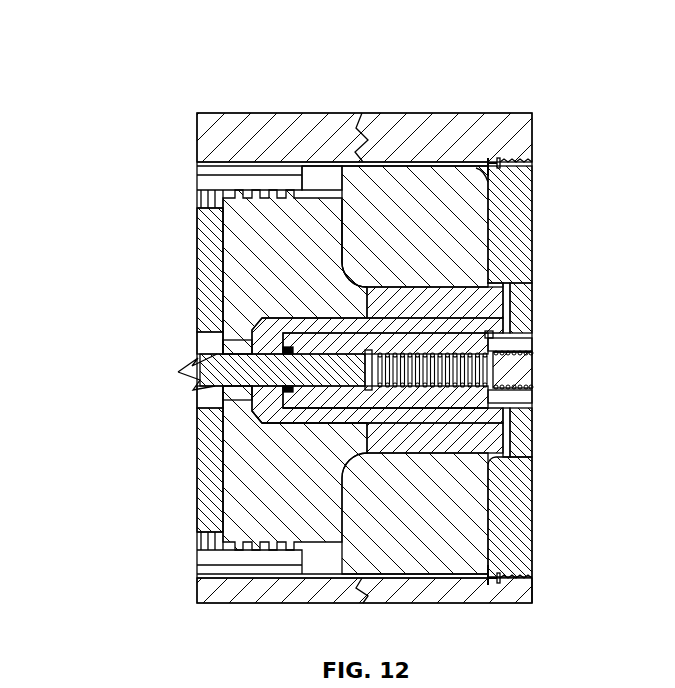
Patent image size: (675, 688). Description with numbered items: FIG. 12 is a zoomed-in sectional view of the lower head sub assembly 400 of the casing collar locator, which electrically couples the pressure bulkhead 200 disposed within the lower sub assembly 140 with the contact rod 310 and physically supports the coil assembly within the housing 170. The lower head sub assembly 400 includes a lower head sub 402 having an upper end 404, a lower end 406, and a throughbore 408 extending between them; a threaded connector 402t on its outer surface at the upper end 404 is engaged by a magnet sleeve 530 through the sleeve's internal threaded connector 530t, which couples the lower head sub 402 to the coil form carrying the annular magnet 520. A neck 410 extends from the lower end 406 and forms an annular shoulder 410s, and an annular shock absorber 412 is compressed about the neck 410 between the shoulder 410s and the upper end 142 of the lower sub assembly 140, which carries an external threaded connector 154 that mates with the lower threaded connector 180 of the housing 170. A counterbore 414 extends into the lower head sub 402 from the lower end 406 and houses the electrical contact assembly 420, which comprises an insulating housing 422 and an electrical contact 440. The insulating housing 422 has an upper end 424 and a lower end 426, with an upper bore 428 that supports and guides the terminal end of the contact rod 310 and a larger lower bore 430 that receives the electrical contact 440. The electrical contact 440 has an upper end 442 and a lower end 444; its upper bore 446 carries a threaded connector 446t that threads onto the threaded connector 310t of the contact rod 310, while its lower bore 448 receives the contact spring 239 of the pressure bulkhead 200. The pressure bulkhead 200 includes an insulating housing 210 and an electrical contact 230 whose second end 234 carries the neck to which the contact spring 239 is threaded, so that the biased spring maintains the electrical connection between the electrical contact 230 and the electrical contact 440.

The lower head sub assembly 400 is at (115, 84).
The lower head sub 402 is at (322, 180).
The threaded connector 402t is at (238, 186).
The annular shock absorber 412 is at (450, 177).
The magnet sleeve 530 is at (222, 186).
The threaded connector 530t is at (262, 201).
The annular magnet 520 is at (205, 222).
The upper end 404 is at (226, 253).
The upper end 424 is at (218, 347).
The contact rod 310 is at (200, 368).
The threaded connector 310t is at (283, 340).
The throughbore 408 is at (215, 405).
The upper bore 446 is at (305, 348).
The threaded connector 446t is at (352, 345).
The lower bore 448 is at (400, 352).
The upper bore 428 is at (263, 405).
The upper end 442 is at (275, 392).
The insulating housing 422 is at (322, 410).
The electrical contact assembly 420 is at (382, 440).
The lower bore 430 is at (460, 400).
The electrical contact 440 is at (478, 398).
The neck 410 is at (425, 287).
The annular shoulder 410s is at (345, 195).
The external threaded connector 154 is at (526, 168).
The lower sub assembly 140 is at (518, 228).
The upper end 142 is at (493, 268).
The lower end 406 is at (507, 290).
The lower end 444 is at (508, 323).
The insulating housing 210 is at (533, 345).
The second end 234 is at (530, 358).
The electrical contact 230 is at (527, 372).
The pressure bulkhead 200 is at (528, 397).
The counterbore 414 is at (500, 413).
The lower end 426 is at (505, 417).
The contact spring 239 is at (505, 410).
The housing 170 is at (413, 587).
The lower threaded connector 180 is at (527, 602).